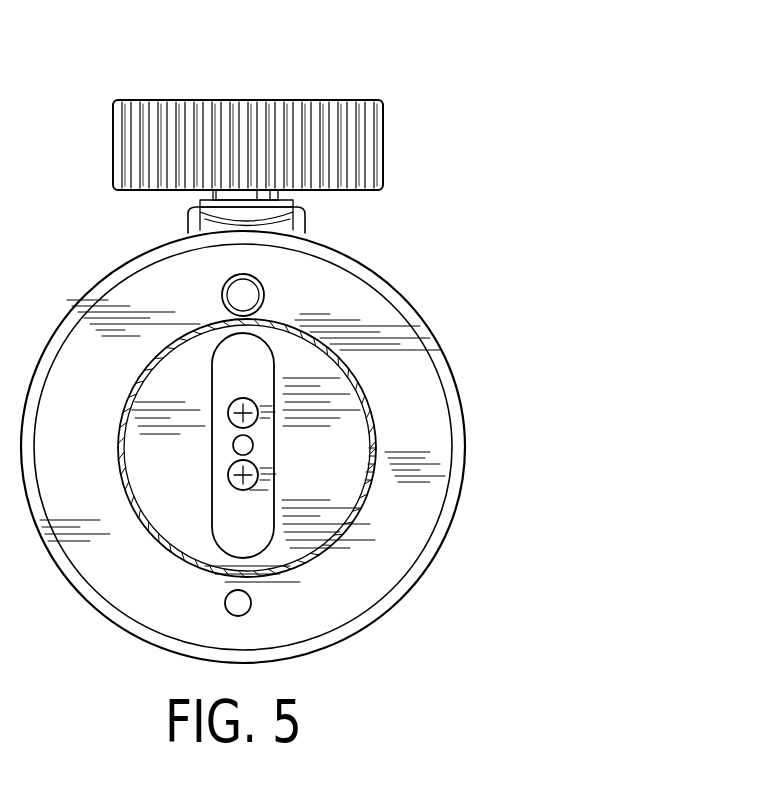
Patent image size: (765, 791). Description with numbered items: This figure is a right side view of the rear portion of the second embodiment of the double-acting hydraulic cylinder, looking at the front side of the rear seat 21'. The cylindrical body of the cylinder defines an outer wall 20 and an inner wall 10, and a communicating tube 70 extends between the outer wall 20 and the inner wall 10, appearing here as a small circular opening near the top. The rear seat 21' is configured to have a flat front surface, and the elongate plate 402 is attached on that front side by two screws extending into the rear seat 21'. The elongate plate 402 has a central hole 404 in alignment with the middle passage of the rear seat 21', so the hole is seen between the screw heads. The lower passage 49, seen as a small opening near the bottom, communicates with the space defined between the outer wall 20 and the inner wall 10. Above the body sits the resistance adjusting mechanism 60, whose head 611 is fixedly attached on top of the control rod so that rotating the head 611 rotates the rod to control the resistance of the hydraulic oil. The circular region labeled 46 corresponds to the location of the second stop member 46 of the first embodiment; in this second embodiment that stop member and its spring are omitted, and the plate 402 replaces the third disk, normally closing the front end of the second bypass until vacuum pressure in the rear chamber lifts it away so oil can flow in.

The resistance adjusting mechanism 60 is at (322, 85).
The head 611 is at (383, 141).
The communicating tube 70 is at (266, 287).
The outer wall 20 is at (413, 298).
The second stop member 46 is at (318, 378).
The inner wall 10 is at (375, 445).
The central hole 404 is at (255, 442).
The elongate plate 402 is at (245, 492).
The rear seat 21' is at (294, 449).
The lower passage 49 is at (250, 603).